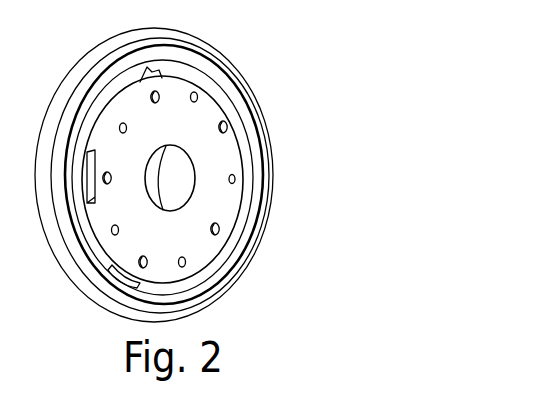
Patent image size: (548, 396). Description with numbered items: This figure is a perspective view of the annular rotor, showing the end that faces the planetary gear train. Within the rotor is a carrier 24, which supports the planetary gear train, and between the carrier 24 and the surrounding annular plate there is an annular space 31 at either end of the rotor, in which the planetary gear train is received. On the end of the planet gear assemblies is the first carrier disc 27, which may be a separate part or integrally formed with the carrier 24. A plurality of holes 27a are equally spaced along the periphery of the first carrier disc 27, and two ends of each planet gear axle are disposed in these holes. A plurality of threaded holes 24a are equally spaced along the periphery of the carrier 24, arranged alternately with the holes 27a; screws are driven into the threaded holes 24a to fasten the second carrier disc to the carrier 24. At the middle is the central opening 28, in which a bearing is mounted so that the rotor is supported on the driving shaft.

The carrier 24 is at (210, 110).
The threaded holes 24a is at (236, 178).
The first carrier disc 27 is at (218, 200).
The holes 27a is at (221, 229).
The central opening 28 is at (155, 180).
The annular space 31 is at (177, 67).